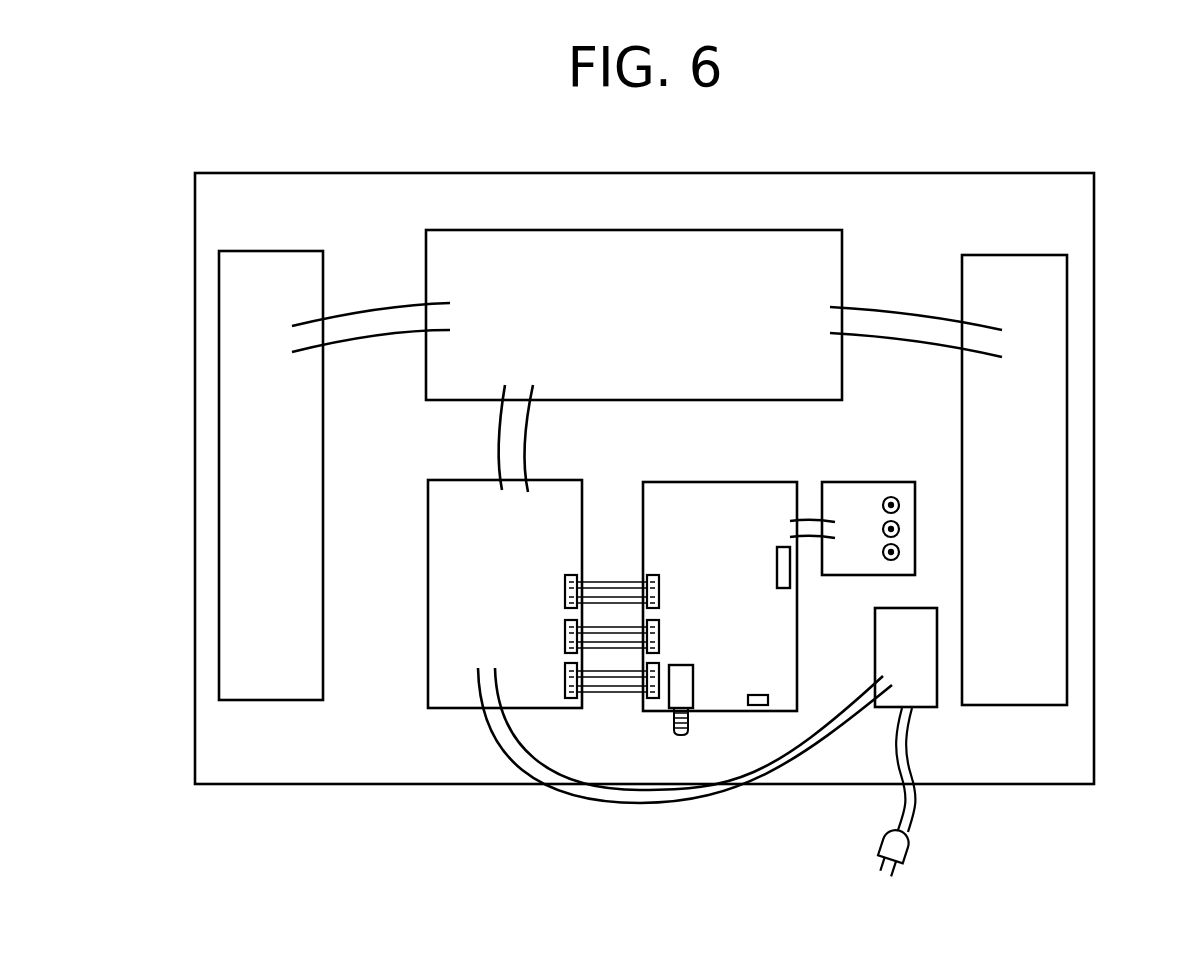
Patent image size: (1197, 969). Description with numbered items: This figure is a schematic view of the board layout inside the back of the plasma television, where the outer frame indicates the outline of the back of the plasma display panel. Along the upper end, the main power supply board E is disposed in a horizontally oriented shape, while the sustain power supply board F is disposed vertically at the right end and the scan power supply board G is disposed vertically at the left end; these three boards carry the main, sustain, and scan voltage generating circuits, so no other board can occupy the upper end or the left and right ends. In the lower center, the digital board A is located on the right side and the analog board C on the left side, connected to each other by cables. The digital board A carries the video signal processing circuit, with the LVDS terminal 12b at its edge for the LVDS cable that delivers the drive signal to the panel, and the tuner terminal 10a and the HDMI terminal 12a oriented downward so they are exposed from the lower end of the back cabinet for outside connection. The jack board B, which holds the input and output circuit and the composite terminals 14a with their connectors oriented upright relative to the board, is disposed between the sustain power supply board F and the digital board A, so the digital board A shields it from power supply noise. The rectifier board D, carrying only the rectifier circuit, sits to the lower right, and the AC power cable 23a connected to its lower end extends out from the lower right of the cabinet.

The digital board A is at (720, 712).
The jack board B is at (999, 518).
The analog board C is at (455, 687).
The rectifier board D is at (938, 657).
The main power supply board E is at (737, 229).
The sustain power supply board F is at (1070, 400).
The scan power supply board G is at (218, 466).
The tuner terminal 10a is at (670, 698).
The HDMI terminal 12a is at (758, 710).
The LVDS terminal 12b is at (774, 560).
The composite terminals 14a is at (898, 529).
The AC power cable 23a is at (913, 815).